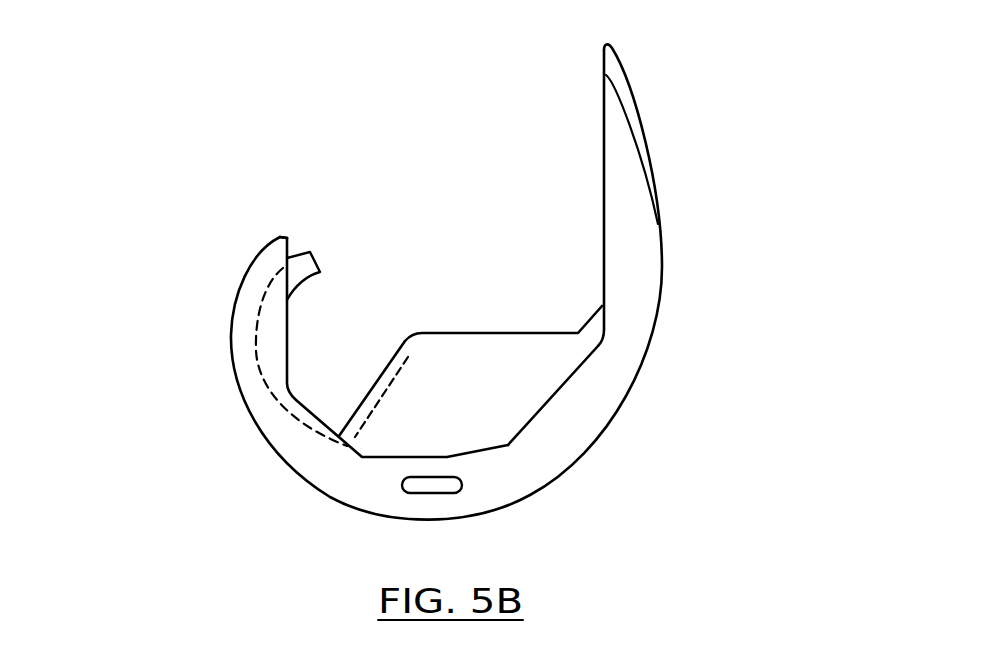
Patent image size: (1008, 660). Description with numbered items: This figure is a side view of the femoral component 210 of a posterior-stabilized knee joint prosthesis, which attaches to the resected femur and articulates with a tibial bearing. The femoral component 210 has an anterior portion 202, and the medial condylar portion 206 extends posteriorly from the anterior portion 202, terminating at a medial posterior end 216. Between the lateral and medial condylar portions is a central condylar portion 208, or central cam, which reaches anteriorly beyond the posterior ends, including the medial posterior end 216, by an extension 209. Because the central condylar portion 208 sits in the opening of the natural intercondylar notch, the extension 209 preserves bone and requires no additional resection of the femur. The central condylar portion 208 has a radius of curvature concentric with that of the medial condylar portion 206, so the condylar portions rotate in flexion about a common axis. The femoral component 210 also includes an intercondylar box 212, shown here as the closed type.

The anterior portion 202 is at (603, 165).
The medial condylar portion 206 is at (237, 393).
The central condylar portion 208 is at (257, 315).
The extension 209 is at (310, 252).
The femoral component 210 is at (673, 79).
The intercondylar box 212 is at (467, 332).
The medial posterior end 216 is at (283, 237).